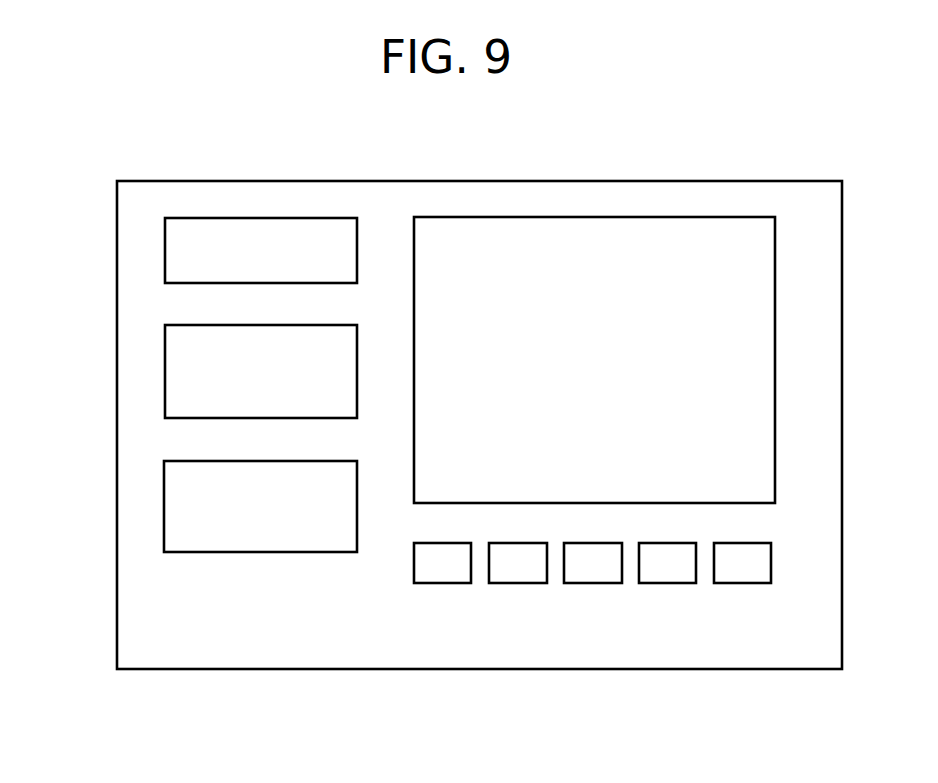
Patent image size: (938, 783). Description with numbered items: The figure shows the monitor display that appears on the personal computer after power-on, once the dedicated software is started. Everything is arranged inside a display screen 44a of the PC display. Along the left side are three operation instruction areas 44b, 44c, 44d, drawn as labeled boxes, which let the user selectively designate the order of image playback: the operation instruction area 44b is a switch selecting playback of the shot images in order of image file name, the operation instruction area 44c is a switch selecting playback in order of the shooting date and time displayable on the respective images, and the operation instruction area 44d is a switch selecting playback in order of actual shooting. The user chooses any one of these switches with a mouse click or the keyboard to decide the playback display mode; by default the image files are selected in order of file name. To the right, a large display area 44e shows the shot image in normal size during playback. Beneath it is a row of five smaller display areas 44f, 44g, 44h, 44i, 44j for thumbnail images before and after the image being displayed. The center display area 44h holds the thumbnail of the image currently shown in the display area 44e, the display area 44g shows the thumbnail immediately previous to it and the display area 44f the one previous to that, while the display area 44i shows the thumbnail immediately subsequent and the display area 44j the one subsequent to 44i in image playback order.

The display screen 44a is at (272, 656).
The operation instruction area 44b is at (165, 247).
The operation instruction area 44c is at (165, 367).
The operation instruction area 44d is at (164, 502).
The display area 44e is at (722, 217).
The display area 44f is at (436, 570).
The display area 44g is at (517, 570).
The display area 44h is at (598, 570).
The display area 44i is at (679, 570).
The display area 44j is at (760, 570).